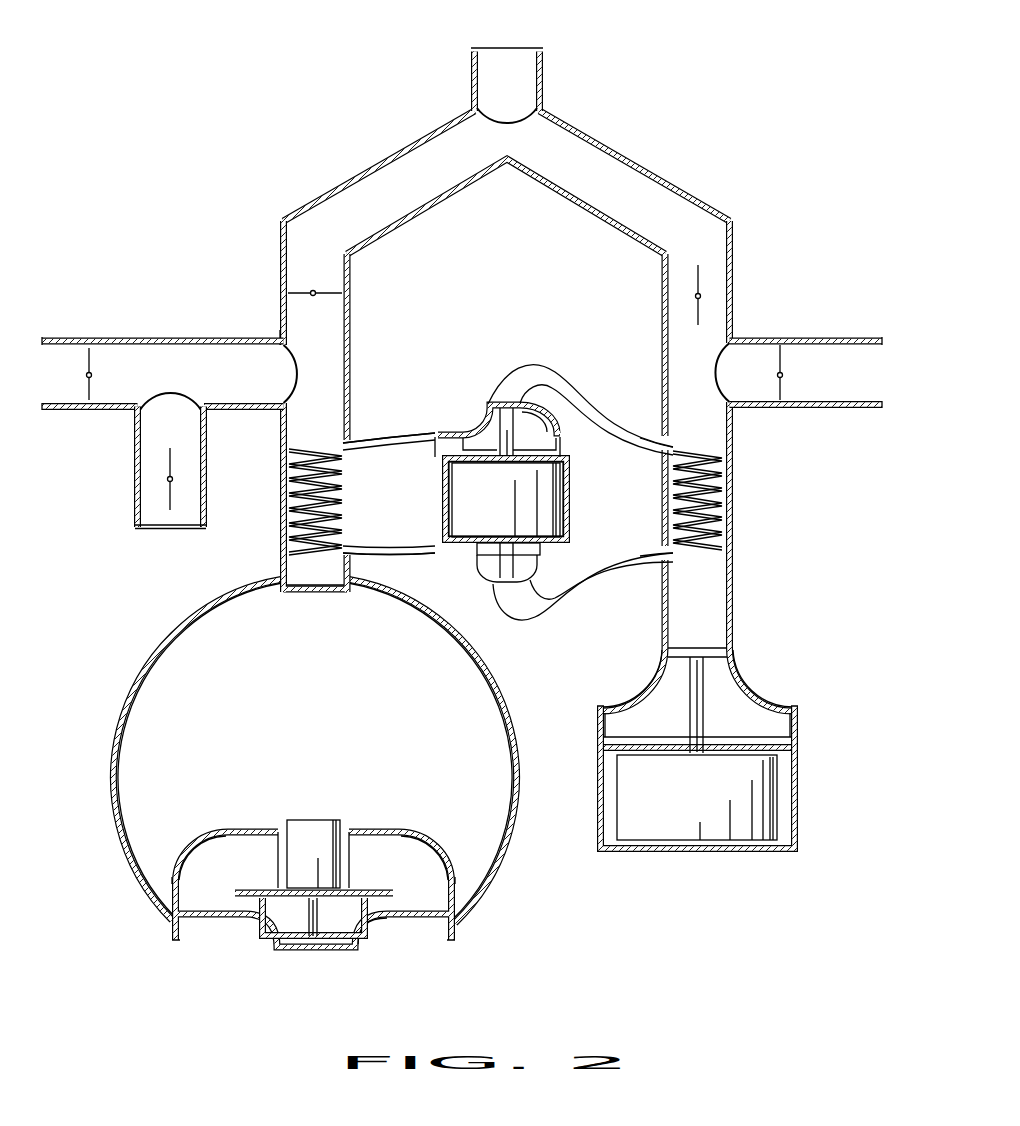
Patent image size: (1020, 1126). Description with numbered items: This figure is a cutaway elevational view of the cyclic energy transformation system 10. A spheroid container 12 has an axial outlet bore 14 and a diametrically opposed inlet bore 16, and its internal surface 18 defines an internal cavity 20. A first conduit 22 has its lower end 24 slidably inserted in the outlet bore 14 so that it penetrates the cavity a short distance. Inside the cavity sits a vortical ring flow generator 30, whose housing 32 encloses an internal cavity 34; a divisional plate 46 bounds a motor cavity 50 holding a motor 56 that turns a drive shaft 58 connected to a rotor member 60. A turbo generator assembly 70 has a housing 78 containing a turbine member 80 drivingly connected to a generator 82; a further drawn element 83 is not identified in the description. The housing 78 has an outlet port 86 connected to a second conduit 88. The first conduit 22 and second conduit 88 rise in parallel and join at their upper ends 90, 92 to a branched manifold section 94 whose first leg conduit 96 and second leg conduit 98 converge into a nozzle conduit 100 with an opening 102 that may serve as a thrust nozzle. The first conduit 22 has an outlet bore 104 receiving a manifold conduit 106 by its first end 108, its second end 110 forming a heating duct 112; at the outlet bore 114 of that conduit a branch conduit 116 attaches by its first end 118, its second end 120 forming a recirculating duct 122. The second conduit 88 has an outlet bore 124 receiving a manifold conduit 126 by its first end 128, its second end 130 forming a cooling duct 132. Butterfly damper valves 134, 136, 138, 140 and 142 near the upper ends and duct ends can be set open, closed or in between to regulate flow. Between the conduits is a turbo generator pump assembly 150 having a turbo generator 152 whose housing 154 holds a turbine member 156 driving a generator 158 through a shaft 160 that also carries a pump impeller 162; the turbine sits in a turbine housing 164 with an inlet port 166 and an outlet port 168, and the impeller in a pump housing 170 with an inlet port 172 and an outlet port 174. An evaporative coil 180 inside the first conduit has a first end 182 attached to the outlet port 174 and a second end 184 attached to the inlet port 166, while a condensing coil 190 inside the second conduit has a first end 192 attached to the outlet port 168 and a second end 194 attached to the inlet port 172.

The cyclic energy transformation system 10 is at (137, 650).
The spheroid container 12 is at (112, 712).
The outlet bore 14 is at (317, 594).
The inlet bore 16 is at (431, 937).
The internal surface 18 is at (138, 692).
The internal cavity 20 is at (155, 831).
The first conduit 22 is at (279, 316).
The lower end 24 is at (277, 588).
The vortical ring flow generator 30 is at (226, 842).
The housing 32 is at (401, 857).
The internal cavity 34 is at (238, 874).
The divisional plate 46 is at (381, 909).
The motor cavity 50 is at (280, 830).
The motor 56 is at (311, 820).
The drive shaft 58 is at (312, 938).
The rotor member 60 is at (290, 926).
The turbo generator assembly 70 is at (756, 692).
The housing 78 is at (801, 728).
The turbine member 80 is at (736, 714).
The generator 82 is at (750, 803).
The piston rod 83 is at (692, 752).
The outlet port 86 is at (666, 645).
The second conduit 88 is at (735, 586).
The upper end 90 is at (351, 282).
The upper end 92 is at (662, 282).
The branched manifold section 94 is at (594, 128).
The first leg conduit 96 is at (406, 152).
The second leg conduit 98 is at (633, 163).
The nozzle conduit 100 is at (547, 80).
The opening 102 is at (523, 47).
The outlet bore 104 is at (294, 372).
The manifold conduit 106 is at (182, 338).
The first end 108 is at (262, 411).
The second end 110 is at (50, 412).
The heating duct 112 is at (44, 338).
The outlet bore 114 is at (173, 392).
The branch conduit 116 is at (135, 461).
The first end 118 is at (135, 426).
The second end 120 is at (135, 509).
The recirculating duct 122 is at (169, 531).
The outlet bore 124 is at (712, 373).
The manifold conduit 126 is at (782, 340).
The first end 128 is at (737, 335).
The second end 130 is at (856, 338).
The cooling duct 132 is at (885, 382).
The damper valve 134 is at (304, 290).
The damper valve 136 is at (703, 281).
The damper valve 138 is at (95, 381).
The damper valve 140 is at (172, 499).
The damper valve 142 is at (785, 386).
The turbo generator pump assembly 150 is at (441, 430).
The turbo generator 152 is at (576, 466).
The housing 154 is at (572, 493).
The generator 158 is at (540, 515).
The turbine member 156 is at (528, 441).
The shaft 160 is at (506, 459).
The pump impeller 162 is at (527, 557).
The turbine housing 164 is at (461, 430).
The inlet port 166 is at (435, 434).
The outlet port 168 is at (536, 371).
The pump housing 170 is at (478, 568).
The inlet port 172 is at (510, 596).
The outlet port 174 is at (426, 546).
The evaporative coil 180 is at (312, 446).
The first end 182 is at (366, 556).
The second end 184 is at (352, 441).
The condensing coil 190 is at (700, 450).
The first end 192 is at (658, 440).
The second end 194 is at (661, 554).